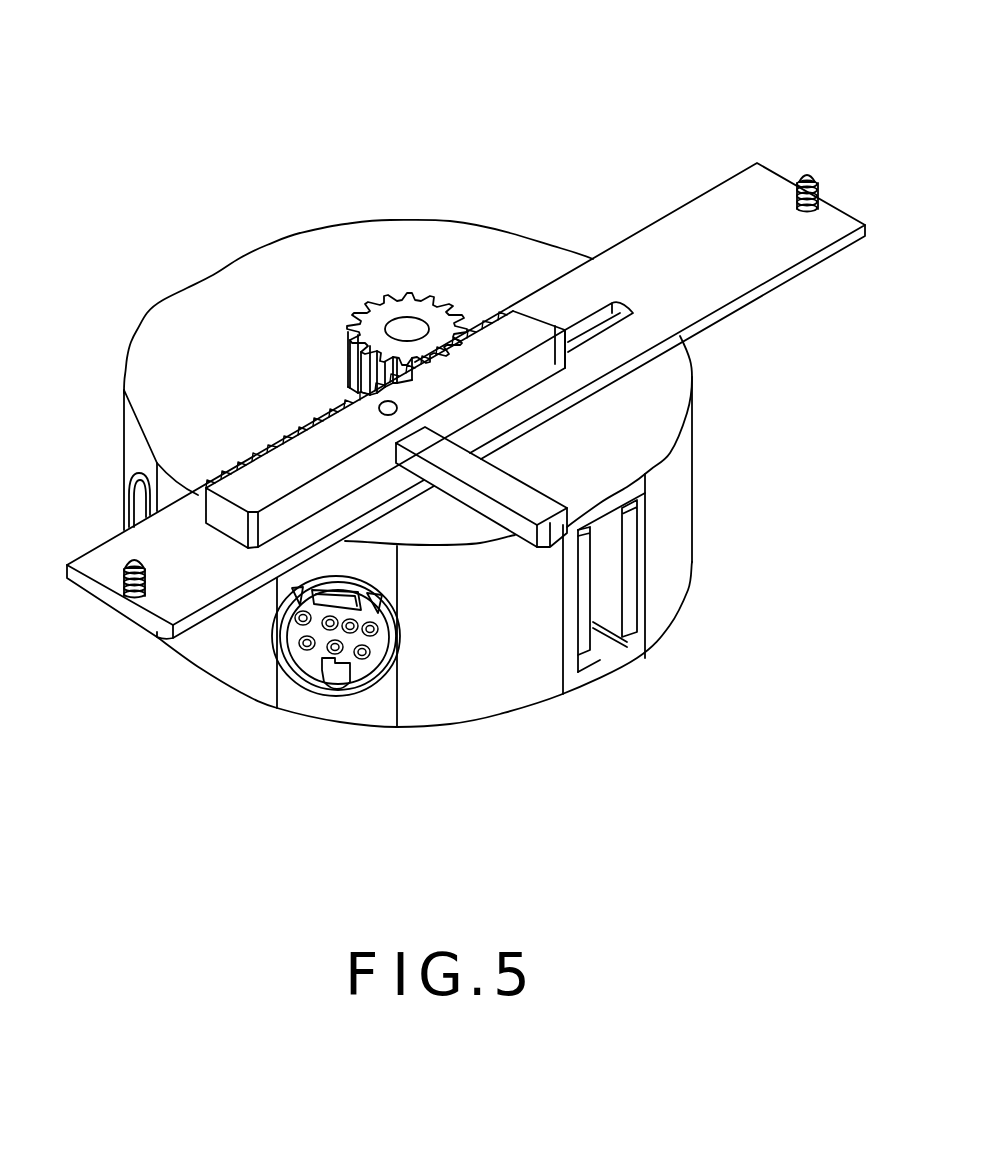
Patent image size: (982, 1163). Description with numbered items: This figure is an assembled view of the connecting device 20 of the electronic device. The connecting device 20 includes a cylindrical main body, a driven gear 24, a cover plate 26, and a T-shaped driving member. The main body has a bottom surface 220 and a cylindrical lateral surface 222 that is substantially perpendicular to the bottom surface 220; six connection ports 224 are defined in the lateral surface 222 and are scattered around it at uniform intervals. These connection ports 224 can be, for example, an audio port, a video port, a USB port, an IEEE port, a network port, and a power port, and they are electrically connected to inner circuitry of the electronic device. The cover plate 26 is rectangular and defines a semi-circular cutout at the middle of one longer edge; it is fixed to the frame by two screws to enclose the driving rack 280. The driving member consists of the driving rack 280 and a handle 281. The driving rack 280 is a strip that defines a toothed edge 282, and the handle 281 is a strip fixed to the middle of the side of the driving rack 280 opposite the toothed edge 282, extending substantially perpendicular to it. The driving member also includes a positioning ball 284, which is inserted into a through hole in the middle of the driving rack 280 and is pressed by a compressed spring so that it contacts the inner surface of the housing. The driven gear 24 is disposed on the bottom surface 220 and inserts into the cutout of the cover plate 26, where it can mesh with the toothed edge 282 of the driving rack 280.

The connecting device 20 is at (205, 60).
The driven gear 24 is at (400, 293).
The cover plate 26 is at (732, 203).
The bottom surface 220 is at (263, 265).
The cylindrical lateral surface 222 is at (472, 690).
The connection ports 224 is at (603, 605).
The driving rack 280 is at (527, 327).
The handle 281 is at (542, 507).
The toothed edge 282 is at (247, 462).
The positioning ball 284 is at (382, 404).